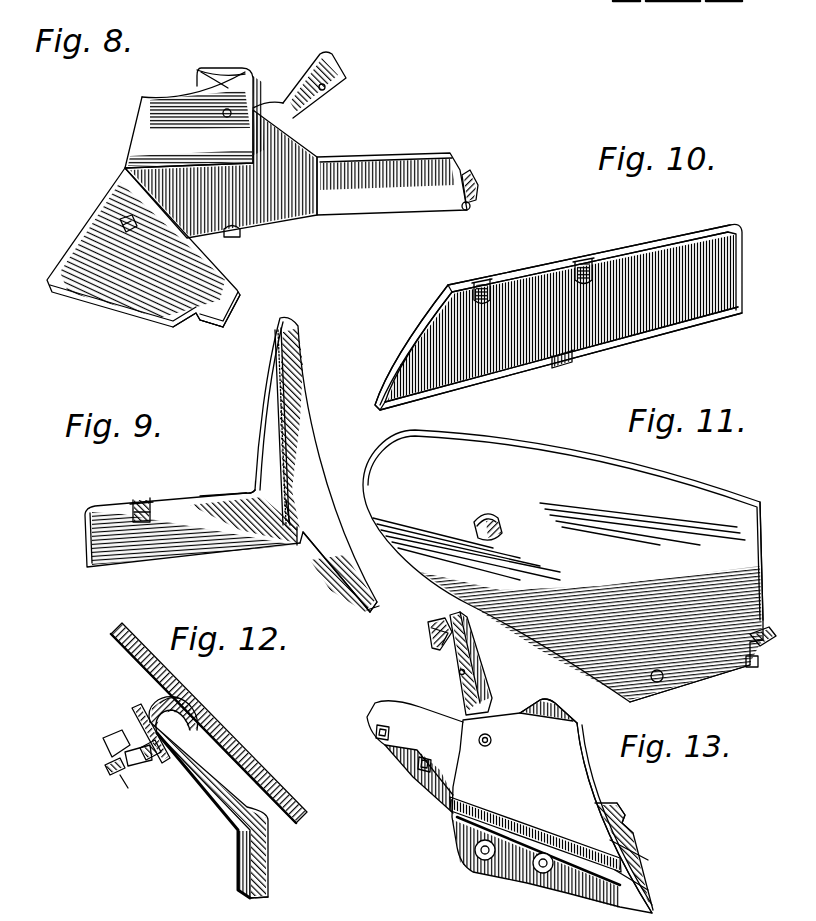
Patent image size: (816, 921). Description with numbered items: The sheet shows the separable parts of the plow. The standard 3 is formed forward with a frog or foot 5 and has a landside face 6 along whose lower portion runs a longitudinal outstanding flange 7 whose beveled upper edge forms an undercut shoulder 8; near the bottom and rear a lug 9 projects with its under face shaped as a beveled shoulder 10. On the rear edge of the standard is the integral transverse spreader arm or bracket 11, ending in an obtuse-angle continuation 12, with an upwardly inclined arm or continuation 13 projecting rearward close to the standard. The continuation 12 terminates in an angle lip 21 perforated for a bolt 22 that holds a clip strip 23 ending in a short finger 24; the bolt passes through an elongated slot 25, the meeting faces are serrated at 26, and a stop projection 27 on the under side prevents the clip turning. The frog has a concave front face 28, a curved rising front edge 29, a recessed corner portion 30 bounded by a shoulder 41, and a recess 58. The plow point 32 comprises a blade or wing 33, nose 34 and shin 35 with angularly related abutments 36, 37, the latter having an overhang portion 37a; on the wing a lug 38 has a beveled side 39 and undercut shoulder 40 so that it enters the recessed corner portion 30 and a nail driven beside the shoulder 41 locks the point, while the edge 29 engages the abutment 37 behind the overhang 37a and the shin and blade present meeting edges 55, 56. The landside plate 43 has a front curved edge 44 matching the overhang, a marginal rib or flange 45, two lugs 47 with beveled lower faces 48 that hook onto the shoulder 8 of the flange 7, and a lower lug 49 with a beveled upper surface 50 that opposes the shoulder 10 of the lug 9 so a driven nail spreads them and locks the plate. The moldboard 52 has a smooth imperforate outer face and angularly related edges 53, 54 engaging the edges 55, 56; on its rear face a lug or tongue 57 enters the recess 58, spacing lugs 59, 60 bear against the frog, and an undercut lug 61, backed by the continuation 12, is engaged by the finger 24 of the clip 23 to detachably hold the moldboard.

In FIG. 8, the standard 3 is at (224, 68).
In FIG. 13, the standard 3 is at (587, 762).
In FIG. 13, the frog or foot 5 is at (635, 862).
In FIG. 13, the landside face 6 is at (552, 806).
In FIG. 13, the longitudinal outstanding flange 7 is at (473, 833).
In FIG. 13, the undercut shoulder 8 is at (540, 834).
In FIG. 8, the lug 9 is at (243, 233).
In FIG. 8, the beveled shoulder 10 is at (229, 239).
In FIG. 8, the spreader arm or bracket 11 is at (221, 174).
In FIG. 12, the spreader arm or bracket 11 is at (270, 868).
In FIG. 13, the spreader arm or bracket 11 is at (500, 710).
In FIG. 8, the obtuse-angle continuation 12 is at (392, 184).
In FIG. 12, the obtuse-angle continuation 12 is at (230, 815).
In FIG. 13, the obtuse-angle continuation 12 is at (483, 666).
In FIG. 8, the arm or continuation 13 is at (298, 80).
In FIG. 13, the arm or continuation 13 is at (403, 753).
In FIG. 8, the angle lip 21 is at (470, 176).
In FIG. 12, the angle lip 21 is at (133, 776).
In FIG. 13, the angle lip 21 is at (428, 633).
In FIG. 12, the bolt 22 is at (151, 765).
In FIG. 12, the clip strip 23 is at (110, 777).
In FIG. 12, the short finger 24 is at (165, 695).
In FIG. 12, the elongated slot 25 is at (115, 763).
In FIG. 8, the serrations 26 is at (480, 190).
In FIG. 12, the serrations 26 is at (118, 790).
In FIG. 13, the serrations 26 is at (436, 626).
In FIG. 8, the stop projection 27 is at (472, 208).
In FIG. 12, the stop projection 27 is at (135, 717).
In FIG. 8, the concave front face 28 is at (143, 247).
In FIG. 8, the curved rising front edge 29 is at (120, 221).
In FIG. 13, the curved rising front edge 29 is at (605, 820).
In FIG. 8, the recessed corner portion 30 is at (204, 330).
In FIG. 9, the plow point 32 is at (321, 572).
In FIG. 9, the blade or wing 33 is at (112, 558).
In FIG. 9, the nose 34 is at (347, 602).
In FIG. 9, the shin 35 is at (290, 428).
In FIG. 9, the abutment 36 is at (257, 545).
In FIG. 9, the abutment 37 is at (282, 394).
In FIG. 9, the overhang portion 37a is at (296, 493).
In FIG. 9, the lug 38 is at (141, 502).
In FIG. 9, the beveled or undercut side 39 is at (150, 513).
In FIG. 9, the beveled or undercut shoulder 40 is at (131, 504).
In FIG. 8, the shoulder 41 is at (196, 319).
In FIG. 13, the shoulder 41 is at (630, 832).
In FIG. 10, the landside plate 43 is at (647, 320).
In FIG. 10, the front curved edge 44 is at (428, 353).
In FIG. 10, the marginal rib or flange 45 is at (657, 258).
In FIG. 10, the lugs 47 is at (485, 282).
In FIG. 10, the beveled lower faces 48 is at (478, 281).
In FIG. 10, the lug 49 is at (563, 370).
In FIG. 10, the beveled upper surface 50 is at (574, 364).
In FIG. 11, the moldboard 52 is at (563, 566).
In FIG. 12, the moldboard 52 is at (258, 776).
In FIG. 11, the edge 53 is at (763, 545).
In FIG. 11, the edge 54 is at (710, 680).
In FIG. 9, the meeting edge 55 is at (259, 421).
In FIG. 9, the meeting edge 56 is at (213, 498).
In FIG. 11, the lug or tongue 57 is at (765, 632).
In FIG. 8, the recess 58 is at (120, 226).
In FIG. 11, the spacing lug 59 is at (657, 684).
In FIG. 11, the spacing lug 60 is at (753, 667).
In FIG. 11, the undercut lug 61 is at (477, 524).
In FIG. 12, the undercut lug 61 is at (198, 720).